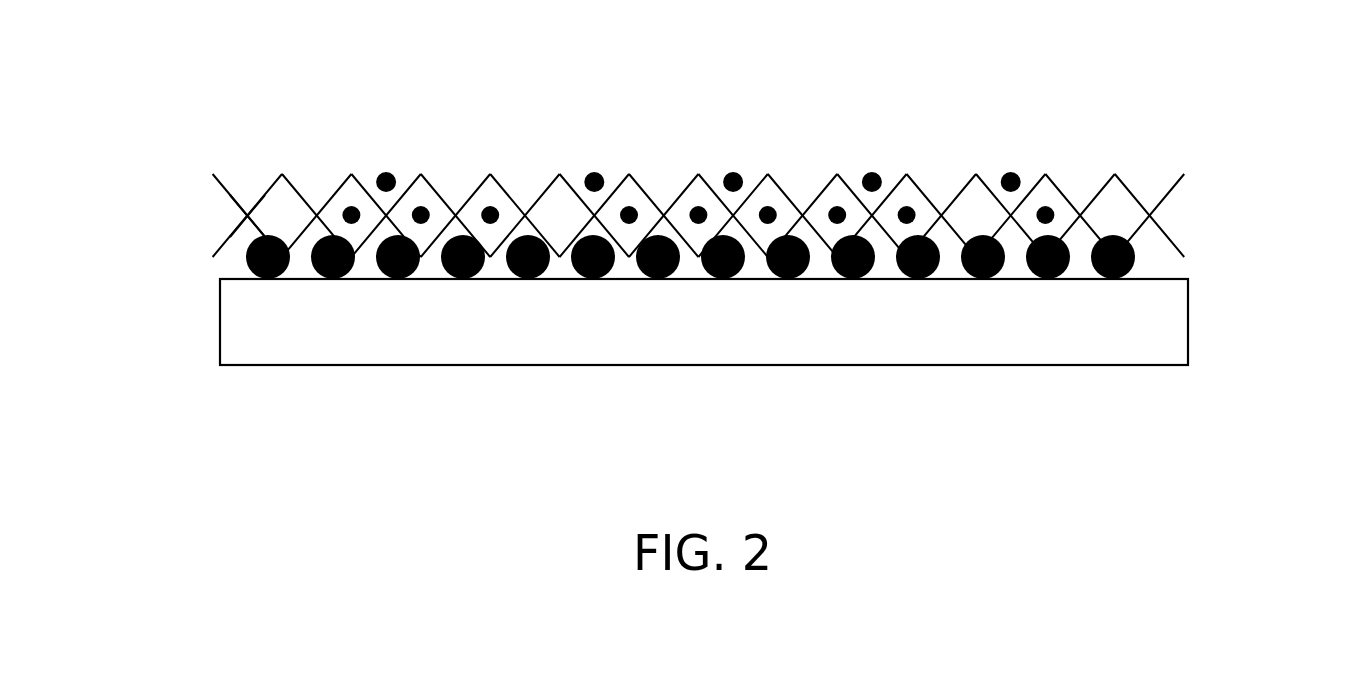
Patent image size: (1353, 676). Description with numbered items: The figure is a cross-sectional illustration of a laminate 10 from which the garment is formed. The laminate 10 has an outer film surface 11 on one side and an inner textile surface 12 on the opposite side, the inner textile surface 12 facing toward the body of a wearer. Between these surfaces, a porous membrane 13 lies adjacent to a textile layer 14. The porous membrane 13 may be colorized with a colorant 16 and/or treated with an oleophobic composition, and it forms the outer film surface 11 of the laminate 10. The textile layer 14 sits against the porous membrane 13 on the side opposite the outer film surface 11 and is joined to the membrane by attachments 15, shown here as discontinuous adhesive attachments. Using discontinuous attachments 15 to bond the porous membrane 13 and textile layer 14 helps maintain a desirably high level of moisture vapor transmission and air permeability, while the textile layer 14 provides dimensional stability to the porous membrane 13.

The laminate 10 is at (213, 174).
The outer film surface 11 is at (1115, 175).
The inner textile surface 12 is at (892, 365).
The porous membrane 13 is at (247, 215).
The textile layer 14 is at (220, 320).
The attachments 15 is at (1135, 262).
The colorant 16 is at (630, 207).